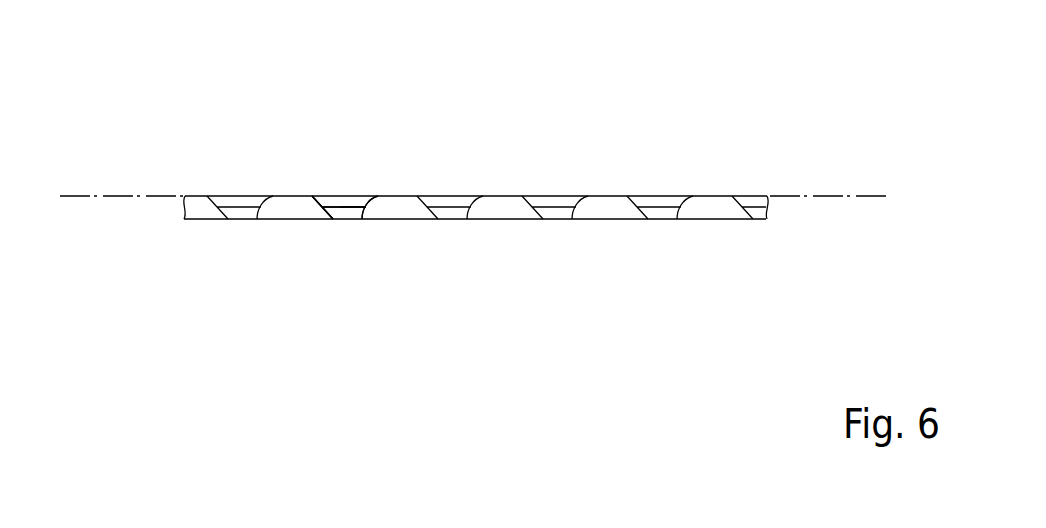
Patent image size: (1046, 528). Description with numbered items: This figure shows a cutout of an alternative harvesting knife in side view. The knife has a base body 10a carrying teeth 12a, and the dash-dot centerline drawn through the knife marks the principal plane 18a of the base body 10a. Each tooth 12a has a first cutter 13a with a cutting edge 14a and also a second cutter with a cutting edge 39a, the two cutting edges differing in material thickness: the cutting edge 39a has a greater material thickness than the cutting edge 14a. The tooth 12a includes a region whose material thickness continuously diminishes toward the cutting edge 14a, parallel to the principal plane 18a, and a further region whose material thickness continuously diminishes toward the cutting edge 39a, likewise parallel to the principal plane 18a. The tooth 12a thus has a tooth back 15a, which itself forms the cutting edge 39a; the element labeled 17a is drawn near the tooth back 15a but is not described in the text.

The base body 10a is at (771, 193).
The principal plane 18a is at (119, 196).
The tooth 12a is at (323, 187).
The tongue / longitudinal web 17a is at (347, 207).
The tooth back 15a is at (357, 207).
The first cutter 13a is at (306, 208).
The cutting edge 14a is at (322, 207).
The cutting edge 39a is at (353, 207).